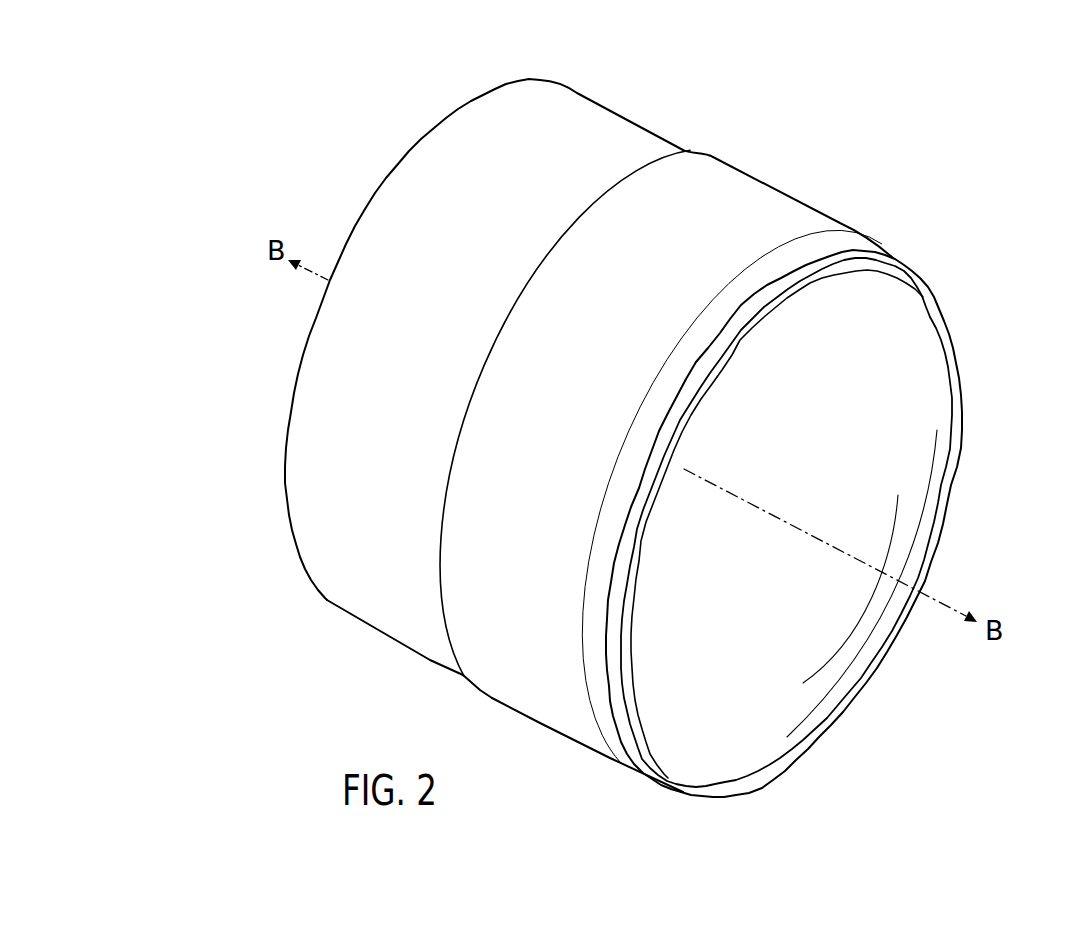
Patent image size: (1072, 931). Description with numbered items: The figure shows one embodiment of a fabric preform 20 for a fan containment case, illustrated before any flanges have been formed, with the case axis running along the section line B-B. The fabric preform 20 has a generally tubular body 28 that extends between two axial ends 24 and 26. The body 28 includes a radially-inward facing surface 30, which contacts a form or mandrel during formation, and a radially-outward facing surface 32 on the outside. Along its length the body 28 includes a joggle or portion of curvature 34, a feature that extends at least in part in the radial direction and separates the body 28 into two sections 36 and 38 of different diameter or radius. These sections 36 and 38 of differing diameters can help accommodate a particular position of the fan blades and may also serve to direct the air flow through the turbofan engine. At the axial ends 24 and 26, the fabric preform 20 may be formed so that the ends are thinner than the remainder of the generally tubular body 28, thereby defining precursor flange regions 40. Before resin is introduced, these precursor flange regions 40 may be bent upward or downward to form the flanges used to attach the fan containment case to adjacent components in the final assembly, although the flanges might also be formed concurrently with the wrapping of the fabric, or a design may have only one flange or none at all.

The fabric preform 20 is at (592, 428).
The axial end 24 is at (655, 712).
The axial end 26 is at (260, 418).
The generally tubular body 28 is at (743, 207).
The radially-inward facing surface 30 is at (787, 597).
The radially-outward facing surface 32 is at (585, 375).
The joggle or portion of curvature 34 is at (652, 165).
The section 36 is at (540, 677).
The section 38 is at (380, 600).
The precursor flange region 40 is at (608, 588).